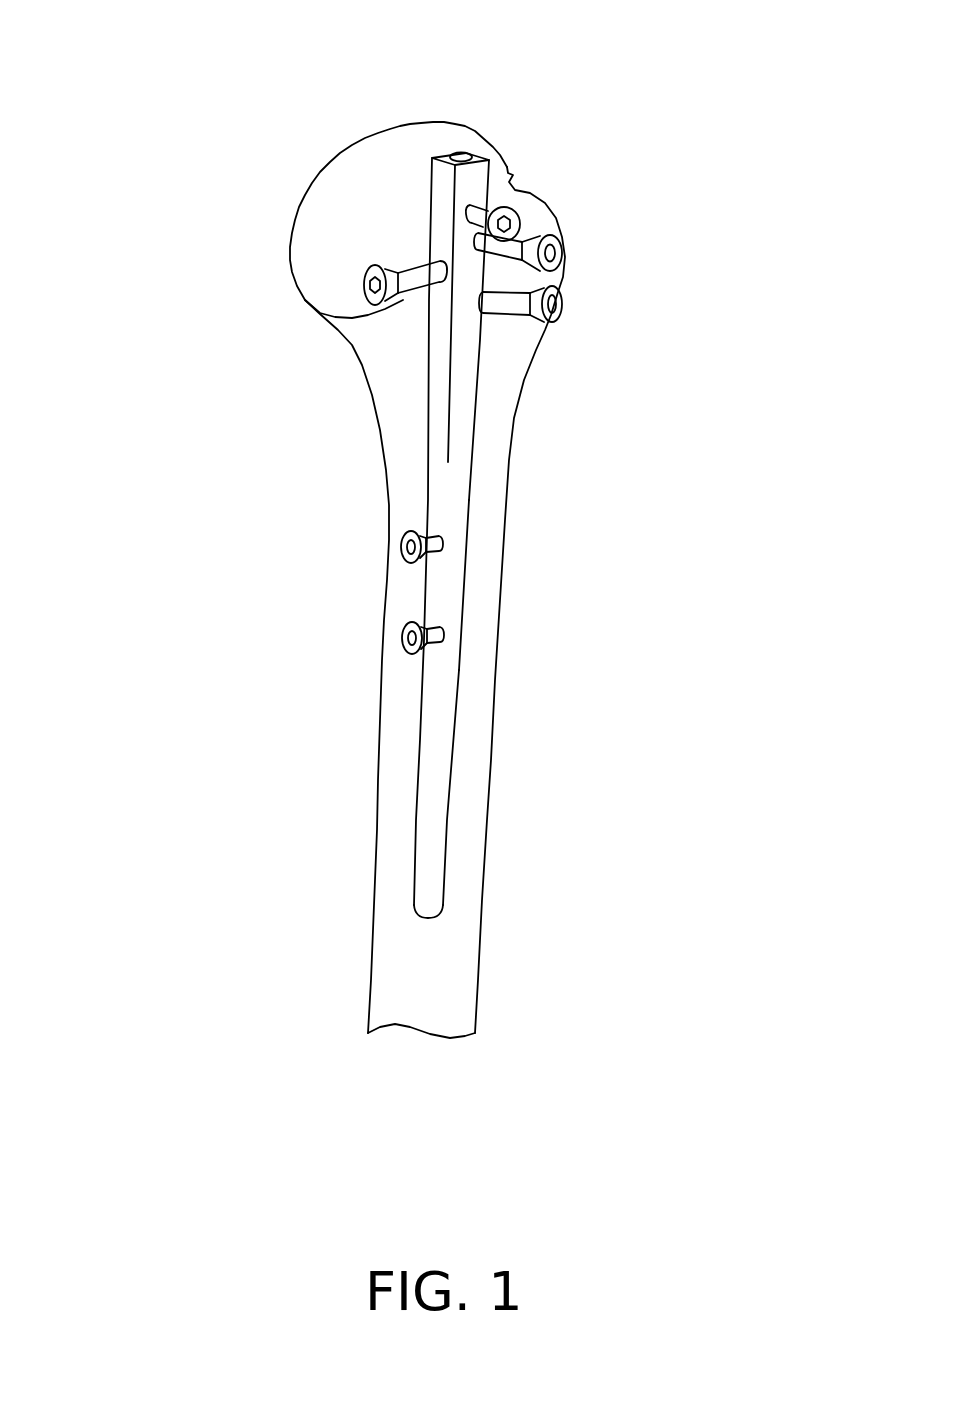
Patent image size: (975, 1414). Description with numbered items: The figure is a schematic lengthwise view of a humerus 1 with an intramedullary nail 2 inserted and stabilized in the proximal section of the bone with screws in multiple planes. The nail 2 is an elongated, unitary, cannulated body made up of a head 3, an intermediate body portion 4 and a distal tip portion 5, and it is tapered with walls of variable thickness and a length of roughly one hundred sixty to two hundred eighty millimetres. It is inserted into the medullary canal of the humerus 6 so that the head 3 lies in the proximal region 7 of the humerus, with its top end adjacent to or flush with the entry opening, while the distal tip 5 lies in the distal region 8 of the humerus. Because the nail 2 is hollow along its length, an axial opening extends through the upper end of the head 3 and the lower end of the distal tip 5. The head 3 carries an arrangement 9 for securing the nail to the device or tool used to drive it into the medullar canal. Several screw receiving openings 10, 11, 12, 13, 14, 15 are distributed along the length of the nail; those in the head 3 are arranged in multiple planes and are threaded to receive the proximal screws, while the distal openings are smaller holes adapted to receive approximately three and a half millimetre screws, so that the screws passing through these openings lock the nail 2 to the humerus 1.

The humerus 1 is at (427, 583).
The intramedullary nail 2 is at (529, 525).
The head 3 is at (537, 326).
The intermediate body portion 4 is at (546, 585).
The distal tip portion 5 is at (542, 787).
The medullary canal of the humerus 6 is at (432, 1074).
The proximal region of the humerus 7 is at (398, 161).
The distal region of the humerus 8 is at (564, 904).
The arrangement for securing the head of the nail 9 is at (503, 92).
The screw receiving opening 10 is at (562, 180).
The screw receiving opening 11 is at (557, 217).
The screw receiving opening 12 is at (567, 324).
The screw receiving opening 13 is at (333, 216).
The screw receiving opening 14 is at (327, 527).
The screw receiving opening 15 is at (338, 627).